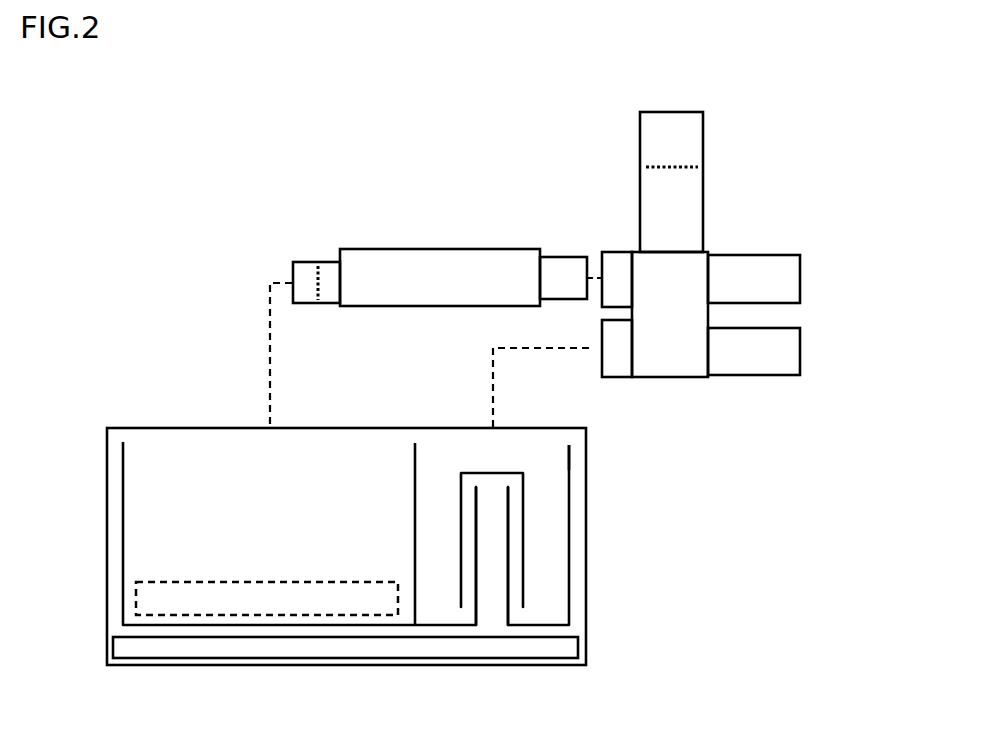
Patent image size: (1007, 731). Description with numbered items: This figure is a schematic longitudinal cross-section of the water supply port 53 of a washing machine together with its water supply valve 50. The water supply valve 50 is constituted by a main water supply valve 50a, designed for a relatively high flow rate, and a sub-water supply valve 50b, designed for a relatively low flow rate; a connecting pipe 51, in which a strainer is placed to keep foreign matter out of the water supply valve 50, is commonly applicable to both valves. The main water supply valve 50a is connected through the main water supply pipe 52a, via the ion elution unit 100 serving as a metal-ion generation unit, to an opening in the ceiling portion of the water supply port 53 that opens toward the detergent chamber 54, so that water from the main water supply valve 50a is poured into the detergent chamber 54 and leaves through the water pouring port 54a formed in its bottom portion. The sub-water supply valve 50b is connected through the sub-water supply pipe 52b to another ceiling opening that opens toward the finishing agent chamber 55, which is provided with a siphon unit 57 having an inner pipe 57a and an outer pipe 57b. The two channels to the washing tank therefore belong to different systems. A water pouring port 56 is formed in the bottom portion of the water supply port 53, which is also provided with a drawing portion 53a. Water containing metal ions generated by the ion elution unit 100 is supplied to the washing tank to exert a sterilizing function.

The water supply valve 50 is at (738, 206).
The main water supply valve 50a is at (614, 251).
The sub-water supply valve 50b is at (612, 378).
The connecting pipe 51 is at (703, 133).
The main water supply pipe 52a is at (268, 355).
The sub-water supply pipe 52b is at (491, 380).
The water supply port 53 is at (107, 460).
The drawing portion 53a is at (123, 491).
The detergent chamber 54 is at (140, 522).
The water pouring port 54a is at (136, 598).
The finishing agent chamber 55 is at (545, 450).
The water pouring port 56 is at (339, 659).
The siphon unit 57 is at (555, 549).
The inner pipe 57a is at (508, 579).
The outer pipe 57b is at (523, 543).
The ion elution unit 100 is at (423, 248).